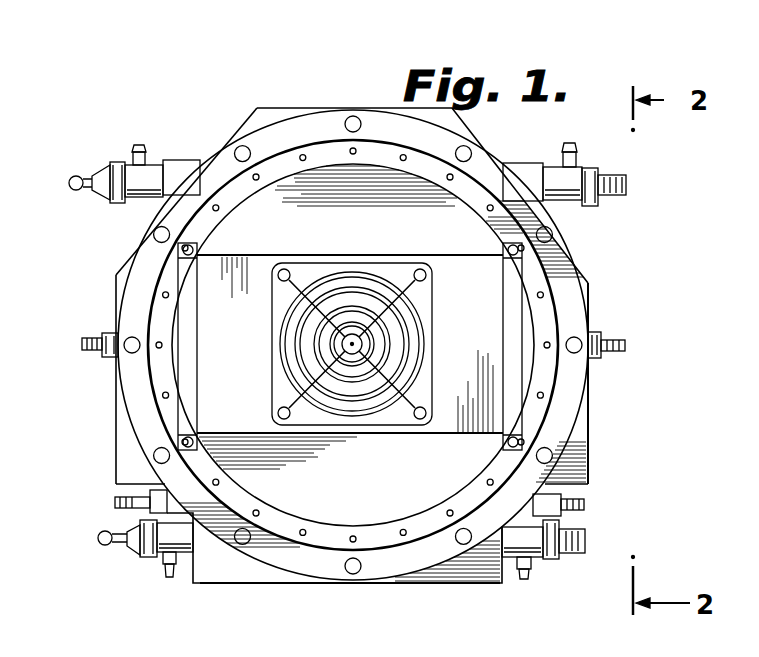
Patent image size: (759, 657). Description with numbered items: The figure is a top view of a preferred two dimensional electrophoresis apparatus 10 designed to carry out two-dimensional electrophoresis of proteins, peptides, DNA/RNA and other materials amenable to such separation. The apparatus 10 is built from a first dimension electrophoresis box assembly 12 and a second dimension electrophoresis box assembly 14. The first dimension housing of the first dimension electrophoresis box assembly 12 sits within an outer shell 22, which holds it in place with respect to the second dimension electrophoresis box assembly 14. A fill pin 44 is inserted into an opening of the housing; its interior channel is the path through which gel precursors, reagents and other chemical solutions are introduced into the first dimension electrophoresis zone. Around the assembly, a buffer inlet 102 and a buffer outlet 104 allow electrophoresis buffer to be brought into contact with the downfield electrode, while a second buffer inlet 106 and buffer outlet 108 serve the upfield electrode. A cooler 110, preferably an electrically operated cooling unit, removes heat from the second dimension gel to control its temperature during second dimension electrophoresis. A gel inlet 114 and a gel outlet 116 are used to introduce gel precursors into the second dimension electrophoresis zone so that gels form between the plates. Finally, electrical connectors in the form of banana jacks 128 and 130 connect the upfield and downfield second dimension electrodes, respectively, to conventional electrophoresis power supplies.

The two dimensional electrophoresis apparatus 10 is at (604, 292).
The first dimension electrophoresis box assembly 12 is at (478, 584).
The second dimension electrophoresis box assembly 14 is at (574, 257).
The outer shell 22 is at (298, 595).
The fill pin 44 is at (142, 470).
The buffer inlet 102 is at (572, 150).
The buffer outlet 104 is at (147, 160).
The buffer inlet 106 is at (535, 574).
The buffer outlet 108 is at (171, 580).
The cooler 110 is at (446, 437).
The gel inlet 114 is at (610, 353).
The gel outlet 116 is at (97, 332).
The banana jack 128 is at (116, 553).
The banana jack 130 is at (77, 172).